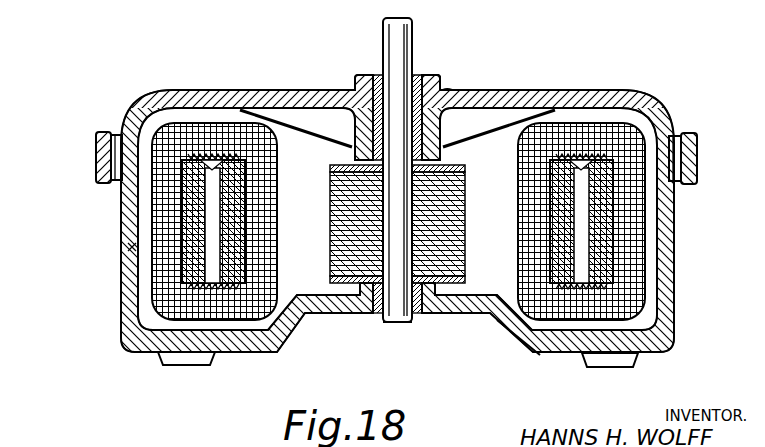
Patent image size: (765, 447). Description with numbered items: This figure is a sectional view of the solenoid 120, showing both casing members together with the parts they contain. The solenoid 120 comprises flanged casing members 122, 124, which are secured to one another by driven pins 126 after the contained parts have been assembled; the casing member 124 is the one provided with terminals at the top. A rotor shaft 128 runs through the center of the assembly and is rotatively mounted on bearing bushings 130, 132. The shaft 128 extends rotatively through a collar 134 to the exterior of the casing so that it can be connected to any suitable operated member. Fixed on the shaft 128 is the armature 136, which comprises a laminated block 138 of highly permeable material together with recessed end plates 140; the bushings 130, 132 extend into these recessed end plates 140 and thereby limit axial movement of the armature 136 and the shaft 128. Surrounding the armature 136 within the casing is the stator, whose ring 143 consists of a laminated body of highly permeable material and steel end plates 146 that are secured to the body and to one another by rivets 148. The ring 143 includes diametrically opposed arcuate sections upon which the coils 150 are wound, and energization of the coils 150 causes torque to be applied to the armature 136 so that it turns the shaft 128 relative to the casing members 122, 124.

The solenoid 120 is at (228, 78).
The casing member 122 is at (592, 90).
The casing member 124 is at (532, 352).
The driven pins 126 is at (113, 132).
The rotor shaft 128 is at (413, 50).
The bearing bushing 130 is at (414, 322).
The bearing bushing 132 is at (446, 95).
The collar 134 is at (380, 75).
The armature 136 is at (462, 154).
The laminated block 138 is at (330, 193).
The recessed end plates 140 is at (346, 152).
The ring 143 is at (291, 158).
The steel end plates 146 is at (121, 315).
The rivets 148 is at (133, 247).
The coils 150 is at (150, 200).